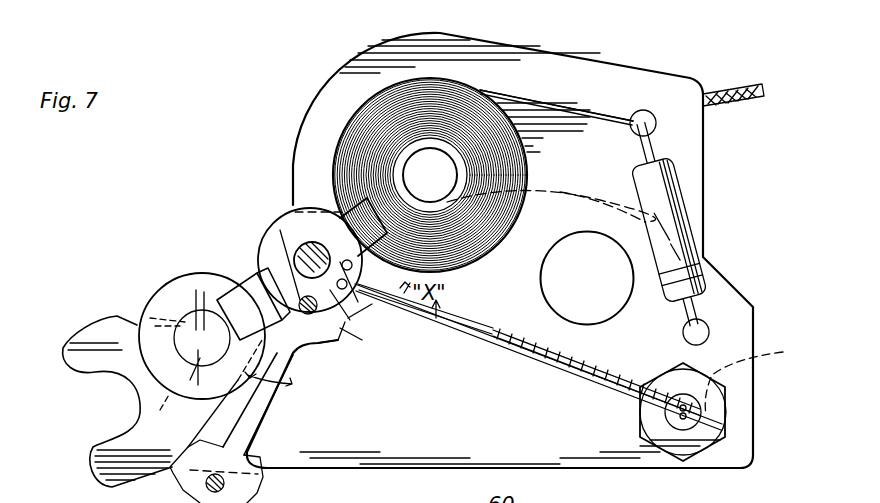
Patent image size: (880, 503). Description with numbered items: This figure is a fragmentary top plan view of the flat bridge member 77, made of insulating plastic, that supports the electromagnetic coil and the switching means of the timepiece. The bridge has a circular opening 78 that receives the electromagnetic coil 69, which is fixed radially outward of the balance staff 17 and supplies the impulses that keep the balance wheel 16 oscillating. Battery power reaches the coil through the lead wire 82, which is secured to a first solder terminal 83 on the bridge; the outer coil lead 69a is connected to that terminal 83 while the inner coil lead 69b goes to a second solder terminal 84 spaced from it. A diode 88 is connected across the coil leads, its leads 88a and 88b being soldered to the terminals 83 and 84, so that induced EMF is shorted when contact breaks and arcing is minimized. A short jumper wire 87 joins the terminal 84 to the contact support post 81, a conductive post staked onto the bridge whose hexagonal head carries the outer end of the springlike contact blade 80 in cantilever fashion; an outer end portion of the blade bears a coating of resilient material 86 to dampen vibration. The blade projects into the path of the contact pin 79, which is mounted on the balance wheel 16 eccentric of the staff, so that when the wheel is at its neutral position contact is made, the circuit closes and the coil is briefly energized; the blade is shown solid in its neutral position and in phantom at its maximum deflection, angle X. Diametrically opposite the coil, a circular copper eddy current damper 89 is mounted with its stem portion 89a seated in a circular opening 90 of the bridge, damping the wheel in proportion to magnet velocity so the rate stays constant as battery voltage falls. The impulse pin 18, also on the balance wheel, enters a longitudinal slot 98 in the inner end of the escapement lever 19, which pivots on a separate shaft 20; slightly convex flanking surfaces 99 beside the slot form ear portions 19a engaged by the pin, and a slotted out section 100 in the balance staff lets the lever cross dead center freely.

The bridge member 77 is at (500, 250).
The circular opening 78 is at (400, 88).
The electromagnetic coil 69 is at (457, 270).
The outer coil lead 69a is at (549, 100).
The inner coil lead 69b is at (566, 186).
The first solder terminal 83 is at (640, 110).
The lead wire 82 is at (750, 85).
The diode 88 is at (682, 226).
The diode lead 88a is at (656, 156).
The diode lead 88b is at (700, 308).
The second solder terminal 84 is at (710, 332).
The jumper wire 87 is at (758, 379).
The contact support post 81 is at (722, 424).
The coating of resilient material 86 is at (596, 375).
The contact blade 80 is at (441, 322).
The balance staff 17 is at (300, 215).
The balance wheel 16 is at (283, 210).
The slotted out section 100 is at (282, 232).
The flanking surfaces 99 is at (286, 246).
The ear portions 19a is at (272, 282).
The contact pin 79 is at (352, 294).
The impulse pin 18 is at (312, 346).
The longitudinal slot 98 is at (282, 390).
The escapement lever 19 is at (268, 432).
The shaft 20 is at (226, 484).
The eddy current damper 89 is at (190, 282).
The stem portion 89a is at (168, 381).
The circular opening 90 is at (138, 322).